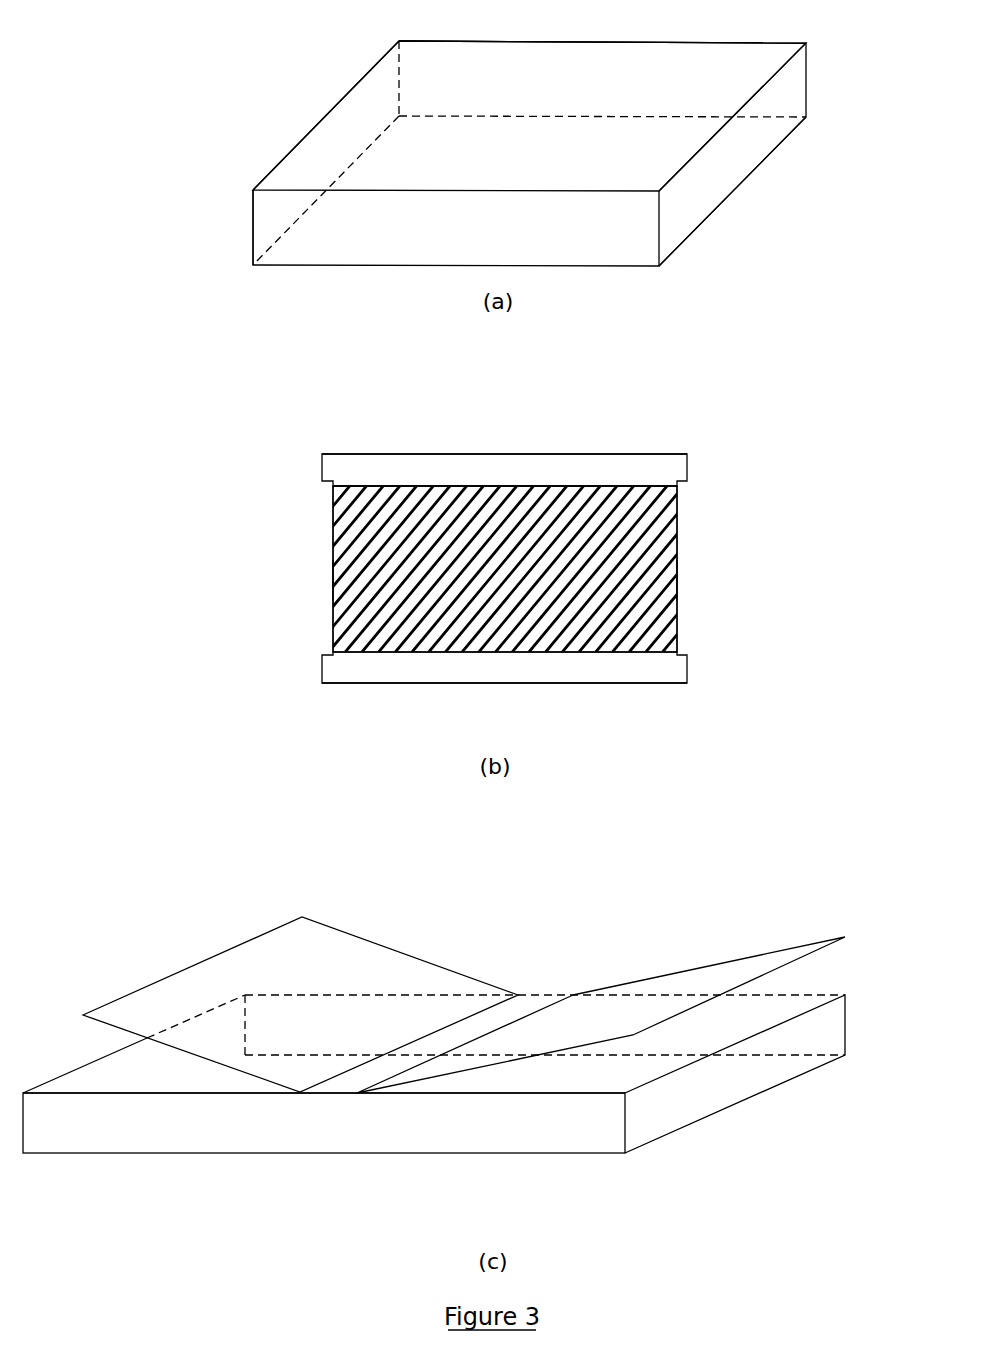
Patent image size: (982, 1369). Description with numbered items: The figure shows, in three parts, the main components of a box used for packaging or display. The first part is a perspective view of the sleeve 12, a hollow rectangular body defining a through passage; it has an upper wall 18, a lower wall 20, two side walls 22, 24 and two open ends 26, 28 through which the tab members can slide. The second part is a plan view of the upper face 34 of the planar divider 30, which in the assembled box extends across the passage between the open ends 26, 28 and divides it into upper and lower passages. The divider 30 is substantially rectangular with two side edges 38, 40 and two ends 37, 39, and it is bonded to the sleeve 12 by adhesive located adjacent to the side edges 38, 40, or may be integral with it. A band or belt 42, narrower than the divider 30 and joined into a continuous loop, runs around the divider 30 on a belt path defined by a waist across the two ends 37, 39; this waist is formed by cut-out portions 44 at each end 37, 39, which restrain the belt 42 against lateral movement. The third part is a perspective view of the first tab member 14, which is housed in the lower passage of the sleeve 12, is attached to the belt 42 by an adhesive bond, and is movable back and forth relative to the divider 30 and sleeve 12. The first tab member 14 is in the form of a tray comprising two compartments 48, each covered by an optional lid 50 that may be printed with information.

The sleeve 12 is at (267, 82).
The first tab member 14 is at (143, 902).
The upper wall 18 is at (637, 68).
The lower wall 20 is at (690, 190).
The side wall 22 is at (473, 78).
The side wall 24 is at (262, 219).
The open end 26 is at (295, 147).
The open end 28 is at (738, 145).
The divider 30 is at (297, 455).
The upper face 34 is at (505, 482).
The end 37 is at (333, 544).
The side edge 38 is at (493, 455).
The end 39 is at (678, 530).
The side edge 40 is at (415, 683).
The belt 42 is at (640, 623).
The cut-out portion 44 is at (680, 580).
The compartment 48 is at (202, 1077).
The lid 50 is at (325, 955).